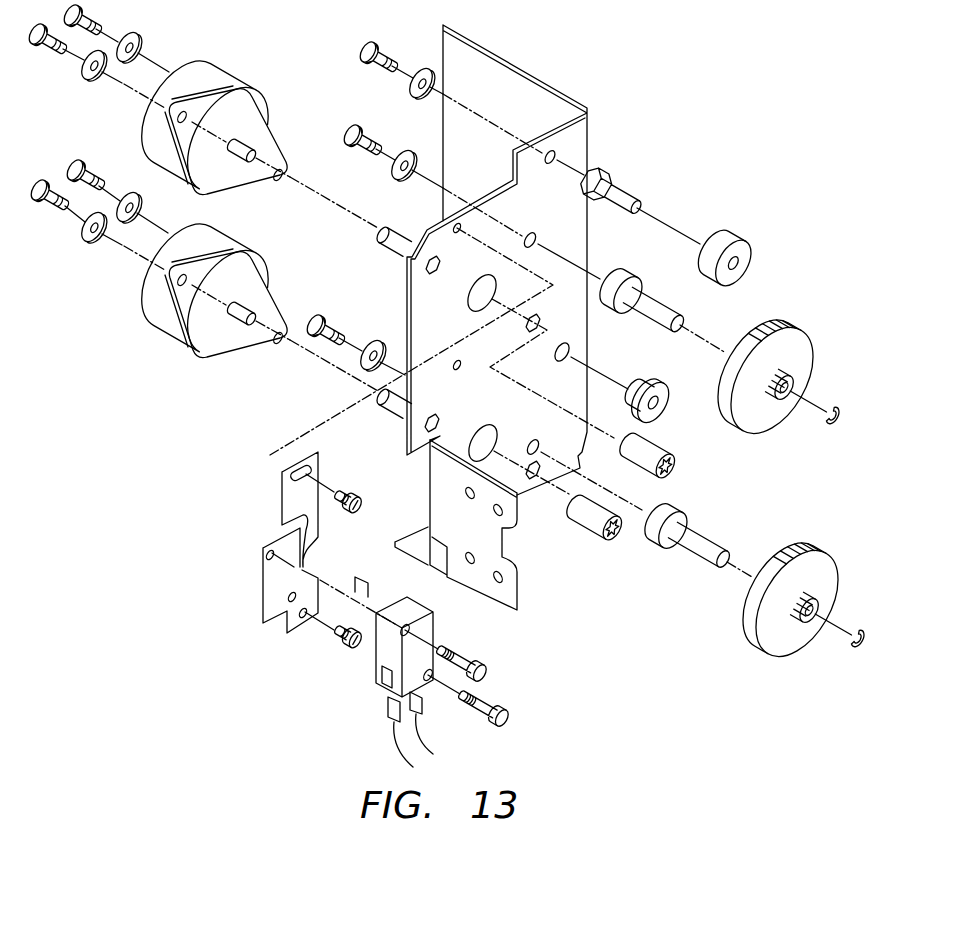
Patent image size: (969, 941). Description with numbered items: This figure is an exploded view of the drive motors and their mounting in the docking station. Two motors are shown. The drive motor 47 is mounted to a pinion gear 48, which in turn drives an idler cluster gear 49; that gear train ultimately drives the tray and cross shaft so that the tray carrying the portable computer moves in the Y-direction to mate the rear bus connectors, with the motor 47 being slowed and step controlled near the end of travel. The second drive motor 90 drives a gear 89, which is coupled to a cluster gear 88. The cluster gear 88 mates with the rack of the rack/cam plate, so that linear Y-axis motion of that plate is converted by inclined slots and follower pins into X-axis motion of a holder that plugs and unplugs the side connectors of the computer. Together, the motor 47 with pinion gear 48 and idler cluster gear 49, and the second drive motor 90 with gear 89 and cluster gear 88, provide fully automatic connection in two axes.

The second drive motor 90 is at (237, 72).
The drive motor 47 is at (167, 340).
The cluster gear 88 is at (781, 320).
The idler cluster gear 49 is at (806, 547).
The gear 89 is at (669, 479).
The pinion gear 48 is at (584, 534).